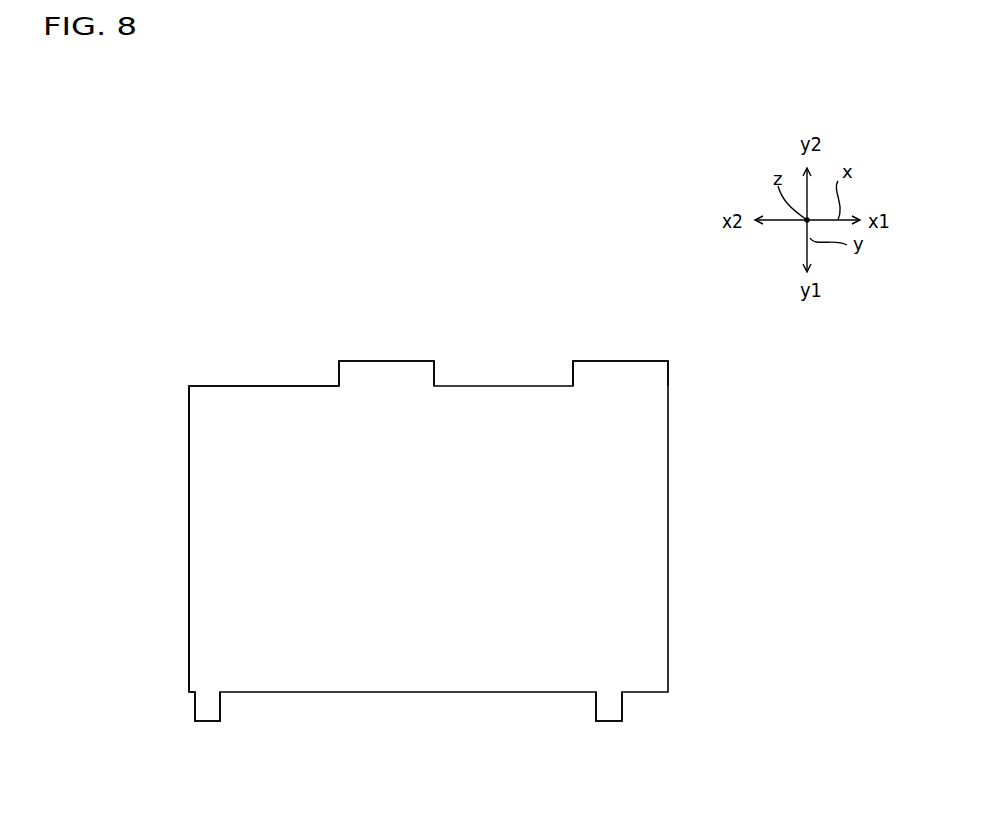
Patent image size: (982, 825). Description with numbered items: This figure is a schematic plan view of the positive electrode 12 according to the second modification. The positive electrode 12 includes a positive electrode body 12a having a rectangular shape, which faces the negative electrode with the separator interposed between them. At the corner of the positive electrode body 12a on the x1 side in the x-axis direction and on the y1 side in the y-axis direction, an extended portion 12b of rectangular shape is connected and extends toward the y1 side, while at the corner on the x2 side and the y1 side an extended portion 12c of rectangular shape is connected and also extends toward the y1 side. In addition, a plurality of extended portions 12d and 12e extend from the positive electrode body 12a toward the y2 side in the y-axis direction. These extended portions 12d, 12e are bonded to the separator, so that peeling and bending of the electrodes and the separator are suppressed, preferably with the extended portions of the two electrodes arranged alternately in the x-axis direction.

The positive electrode 12 is at (450, 370).
The positive electrode body 12a is at (249, 405).
The extended portion 12b is at (607, 708).
The extended portion 12c is at (212, 706).
The extended portion 12d is at (603, 372).
The extended portion 12e is at (392, 372).